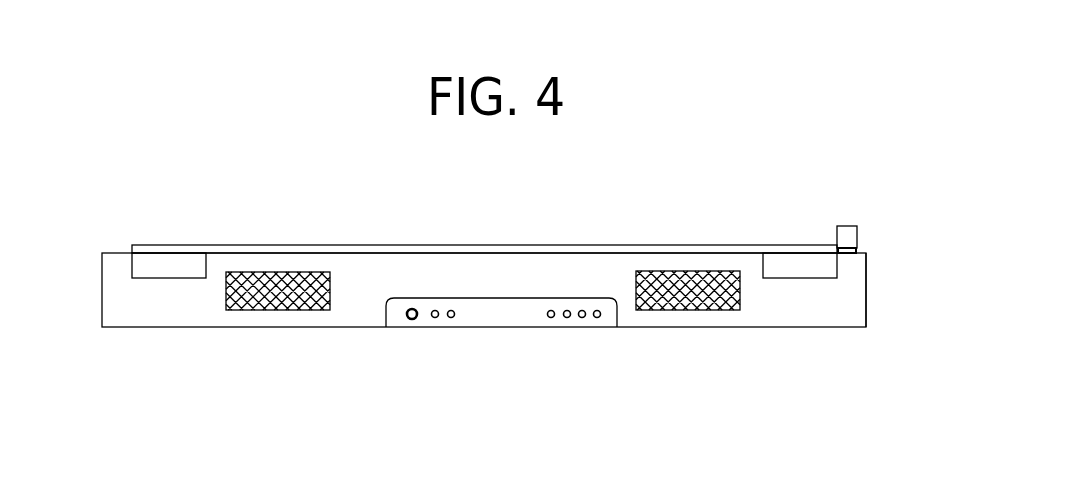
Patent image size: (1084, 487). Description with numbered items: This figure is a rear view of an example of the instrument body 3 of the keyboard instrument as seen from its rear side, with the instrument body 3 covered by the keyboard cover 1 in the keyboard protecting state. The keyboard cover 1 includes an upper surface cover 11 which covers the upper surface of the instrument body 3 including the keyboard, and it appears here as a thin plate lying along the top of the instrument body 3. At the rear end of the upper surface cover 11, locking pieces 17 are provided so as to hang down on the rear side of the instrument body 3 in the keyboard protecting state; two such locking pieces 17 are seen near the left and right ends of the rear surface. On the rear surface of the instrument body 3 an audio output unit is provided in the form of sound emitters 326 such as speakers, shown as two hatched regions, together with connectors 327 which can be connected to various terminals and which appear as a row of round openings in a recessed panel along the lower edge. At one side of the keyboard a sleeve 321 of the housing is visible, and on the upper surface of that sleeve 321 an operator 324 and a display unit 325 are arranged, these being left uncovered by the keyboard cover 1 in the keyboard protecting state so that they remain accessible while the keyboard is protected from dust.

The keyboard cover 1 is at (558, 233).
The instrument body 3 is at (93, 275).
The upper surface cover 11 is at (337, 247).
The locking pieces 17 is at (173, 263).
The sleeve 321 is at (874, 244).
The operator 324 is at (847, 232).
The display unit 325 is at (848, 247).
The sound emitters 326 is at (270, 295).
The connectors 327 is at (501, 365).